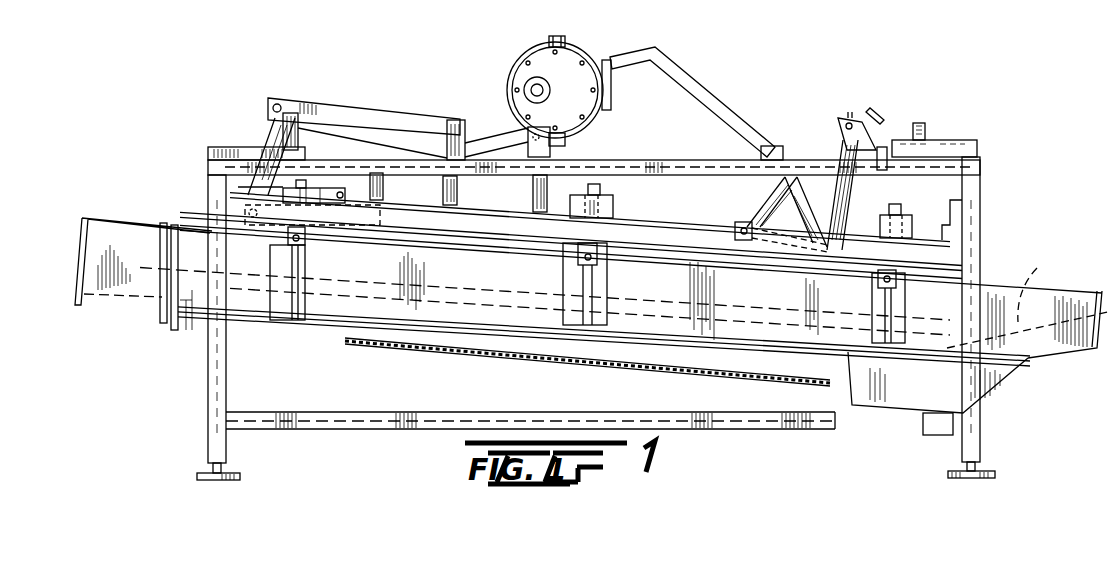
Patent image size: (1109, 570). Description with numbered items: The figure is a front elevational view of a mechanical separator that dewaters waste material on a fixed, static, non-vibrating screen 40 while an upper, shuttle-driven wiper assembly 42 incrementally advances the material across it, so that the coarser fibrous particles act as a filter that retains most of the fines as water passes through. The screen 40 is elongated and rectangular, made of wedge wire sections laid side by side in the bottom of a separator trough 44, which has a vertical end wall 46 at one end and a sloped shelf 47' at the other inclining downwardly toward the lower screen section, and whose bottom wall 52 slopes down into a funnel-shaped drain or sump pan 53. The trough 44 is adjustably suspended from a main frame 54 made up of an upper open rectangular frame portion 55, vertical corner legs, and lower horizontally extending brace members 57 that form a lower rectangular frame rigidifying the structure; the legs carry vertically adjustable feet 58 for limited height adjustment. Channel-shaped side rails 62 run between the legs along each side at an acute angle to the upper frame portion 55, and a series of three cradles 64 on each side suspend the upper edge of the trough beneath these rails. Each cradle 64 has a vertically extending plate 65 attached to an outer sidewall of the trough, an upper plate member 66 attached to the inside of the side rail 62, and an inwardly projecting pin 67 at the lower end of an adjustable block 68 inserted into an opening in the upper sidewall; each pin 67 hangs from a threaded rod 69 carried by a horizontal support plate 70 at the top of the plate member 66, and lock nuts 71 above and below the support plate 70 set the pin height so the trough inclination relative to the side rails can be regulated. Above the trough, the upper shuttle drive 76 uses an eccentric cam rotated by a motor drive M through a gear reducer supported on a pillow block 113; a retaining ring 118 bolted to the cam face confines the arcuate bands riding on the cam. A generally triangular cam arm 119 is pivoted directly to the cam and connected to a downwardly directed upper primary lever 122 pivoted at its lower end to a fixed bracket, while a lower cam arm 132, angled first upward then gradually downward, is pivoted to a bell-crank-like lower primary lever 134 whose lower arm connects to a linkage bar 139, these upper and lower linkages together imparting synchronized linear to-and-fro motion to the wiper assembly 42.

The screen 40 is at (662, 341).
The wiper assembly 42 is at (470, 117).
The separator trough 44 is at (1046, 360).
The end wall 46 is at (80, 216).
The sloped shelf 47' is at (1027, 302).
The bottom wall 52 is at (537, 357).
The sump pan 53 is at (1002, 390).
The main frame 54 is at (1103, 195).
The upper frame portion 55 is at (976, 172).
The lower brace members 57 is at (448, 411).
The adjustable feet 58 is at (985, 459).
The side rails 62 is at (462, 247).
The cradles 64 is at (312, 178).
The vertically extending plate 65 is at (306, 265).
The upper plate member 66 is at (548, 210).
The pin 67 is at (287, 241).
The adjustable block 68 is at (616, 232).
The threaded rod 69 is at (616, 208).
The support plate 70 is at (860, 208).
The lock nuts 71 is at (567, 199).
The shuttle drive 76 is at (513, 60).
The pillow block 113 is at (1108, 110).
The retaining ring 118 is at (581, 44).
The cam arm 119 is at (358, 107).
The upper primary lever 122 is at (262, 130).
The lower cam arm 132 is at (702, 90).
The lower primary lever 134 is at (778, 208).
The linkage bar 139 is at (838, 139).
The motor drive M is at (1108, 74).